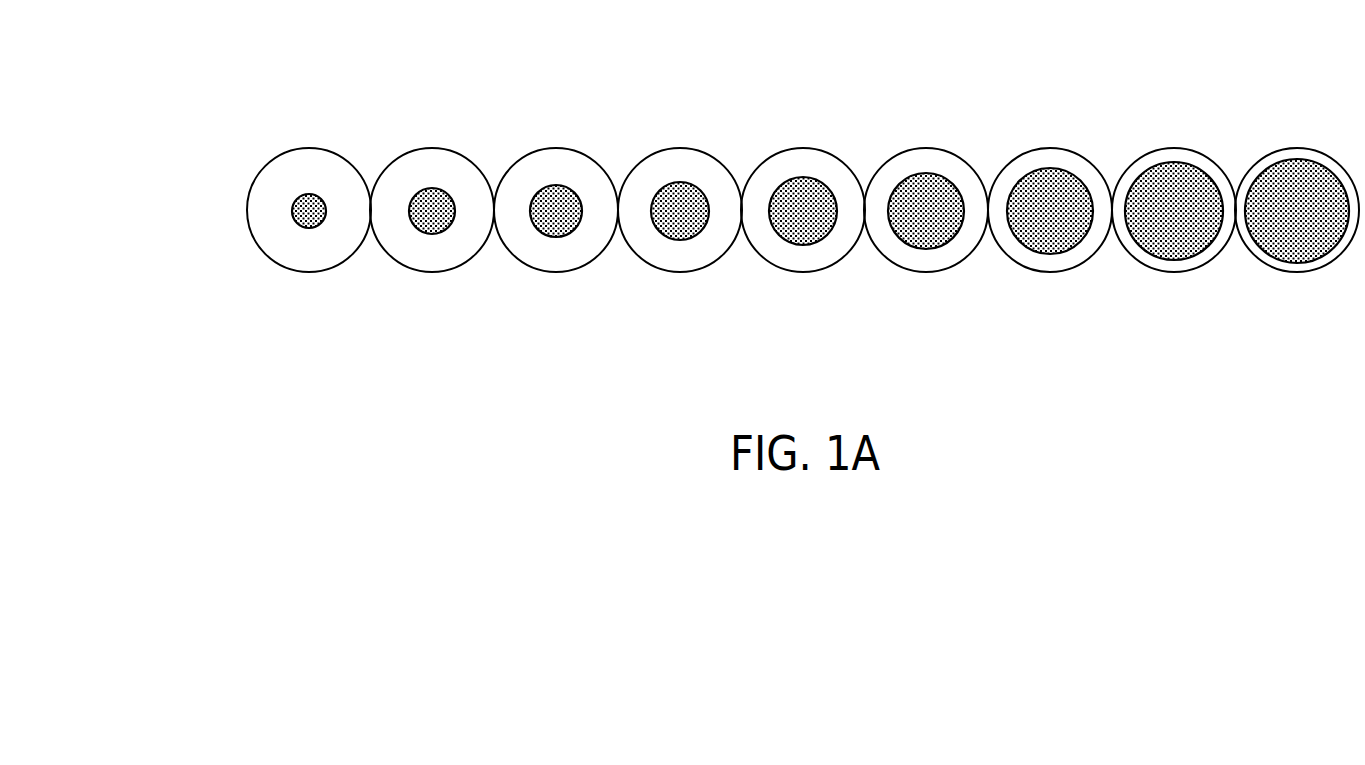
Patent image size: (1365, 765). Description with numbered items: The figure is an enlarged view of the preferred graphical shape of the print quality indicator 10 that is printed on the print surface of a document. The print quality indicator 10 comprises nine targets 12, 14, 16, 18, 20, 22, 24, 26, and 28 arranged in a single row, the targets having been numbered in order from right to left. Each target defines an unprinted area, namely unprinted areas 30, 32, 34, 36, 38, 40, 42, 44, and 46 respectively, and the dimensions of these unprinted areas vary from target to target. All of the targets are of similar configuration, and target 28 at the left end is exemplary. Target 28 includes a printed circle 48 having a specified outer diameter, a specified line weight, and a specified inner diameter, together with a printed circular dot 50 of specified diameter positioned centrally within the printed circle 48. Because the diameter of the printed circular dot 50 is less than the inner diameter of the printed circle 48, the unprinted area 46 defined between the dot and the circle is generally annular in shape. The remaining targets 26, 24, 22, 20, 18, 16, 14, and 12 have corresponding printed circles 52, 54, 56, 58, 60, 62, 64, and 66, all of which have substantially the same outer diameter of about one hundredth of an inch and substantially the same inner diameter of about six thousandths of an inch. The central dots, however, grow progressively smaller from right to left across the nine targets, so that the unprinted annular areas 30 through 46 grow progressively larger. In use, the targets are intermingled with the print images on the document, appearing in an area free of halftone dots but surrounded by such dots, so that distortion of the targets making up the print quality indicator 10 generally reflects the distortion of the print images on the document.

The print quality indicator 10 is at (686, 179).
The target 12 is at (1289, 179).
The target 14 is at (1166, 179).
The target 16 is at (1042, 179).
The target 18 is at (918, 179).
The target 20 is at (795, 179).
The target 22 is at (672, 179).
The target 24 is at (548, 179).
The target 26 is at (424, 179).
The target 28 is at (298, 179).
The unprinted area 30 is at (1295, 268).
The unprinted area 32 is at (1172, 268).
The unprinted area 34 is at (1048, 268).
The unprinted area 36 is at (924, 268).
The unprinted area 38 is at (801, 268).
The unprinted area 40 is at (678, 268).
The unprinted area 42 is at (554, 268).
The unprinted area 44 is at (430, 268).
The unprinted area 46 is at (277, 229).
The printed circle 48 is at (262, 254).
The printed circular dot 50 is at (298, 201).
The printed circle 52 is at (385, 254).
The printed circle 54 is at (509, 254).
The printed circle 56 is at (633, 254).
The printed circle 58 is at (756, 254).
The printed circle 60 is at (879, 254).
The printed circle 62 is at (1003, 254).
The printed circle 64 is at (1127, 254).
The printed circle 66 is at (1250, 254).